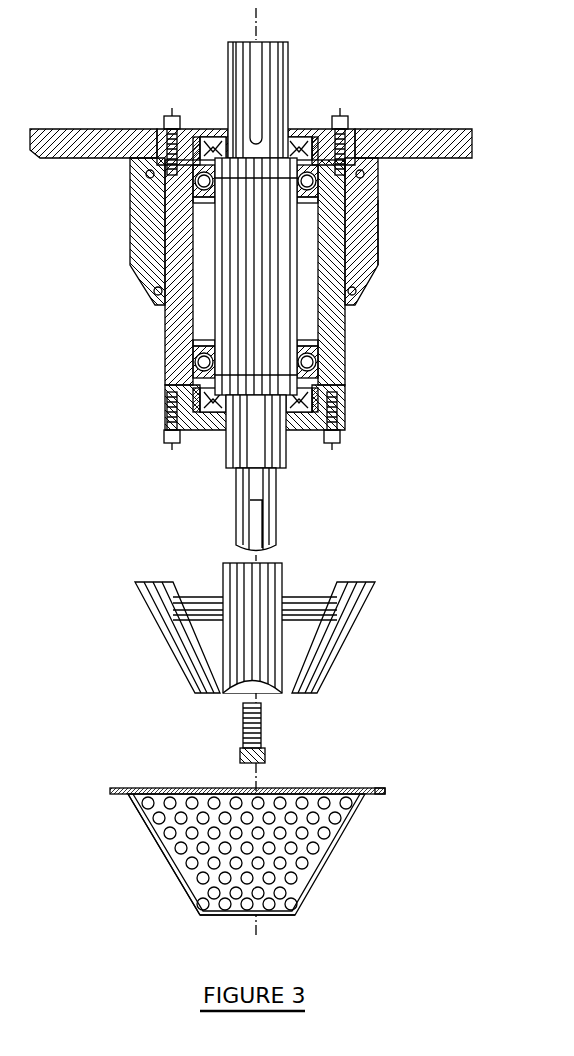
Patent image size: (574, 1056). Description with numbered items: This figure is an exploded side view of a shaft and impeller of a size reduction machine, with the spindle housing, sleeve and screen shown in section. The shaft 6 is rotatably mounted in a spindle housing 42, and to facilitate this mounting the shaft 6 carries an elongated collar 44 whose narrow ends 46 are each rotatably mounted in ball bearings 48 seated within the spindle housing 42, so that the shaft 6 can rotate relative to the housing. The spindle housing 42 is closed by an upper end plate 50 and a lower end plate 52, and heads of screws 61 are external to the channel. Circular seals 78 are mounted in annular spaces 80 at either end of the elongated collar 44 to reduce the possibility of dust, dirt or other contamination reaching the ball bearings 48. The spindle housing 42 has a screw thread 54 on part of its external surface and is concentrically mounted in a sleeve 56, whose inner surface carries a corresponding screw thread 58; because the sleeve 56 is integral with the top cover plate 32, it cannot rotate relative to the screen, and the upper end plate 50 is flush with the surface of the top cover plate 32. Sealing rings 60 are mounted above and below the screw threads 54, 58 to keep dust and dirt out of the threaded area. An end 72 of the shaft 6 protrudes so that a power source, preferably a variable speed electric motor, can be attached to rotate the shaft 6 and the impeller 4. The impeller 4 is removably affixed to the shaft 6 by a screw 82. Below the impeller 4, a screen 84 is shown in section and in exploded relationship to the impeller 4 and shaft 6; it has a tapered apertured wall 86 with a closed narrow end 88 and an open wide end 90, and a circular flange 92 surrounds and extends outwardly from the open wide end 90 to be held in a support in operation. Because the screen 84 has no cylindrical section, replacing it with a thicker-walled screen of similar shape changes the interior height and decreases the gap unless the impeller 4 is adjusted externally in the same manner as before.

The impeller 4 is at (340, 600).
The shaft 6 is at (291, 75).
The top cover plate 32 is at (112, 128).
The spindle housing 42 is at (330, 323).
The elongated collar 44 is at (250, 323).
The narrow ends 46 is at (140, 183).
The ball bearings 48 is at (380, 186).
The upper end plate 50 is at (330, 150).
The lower end plate 52 is at (300, 430).
The screw thread 54 is at (155, 216).
The sleeve 56 is at (380, 212).
The screw thread 58 is at (355, 238).
The sealing rings 60 is at (355, 291).
The screws 61 is at (172, 116).
The end of the shaft 72 is at (288, 43).
The circular seals 78 is at (314, 137).
The annular spaces 80 is at (205, 137).
The screw 82 is at (262, 746).
The screen 84 is at (257, 845).
The tapered apertured wall 86 is at (132, 833).
The closed narrow end 88 is at (295, 918).
The open wide end 90 is at (172, 790).
The circular flange 92 is at (382, 790).